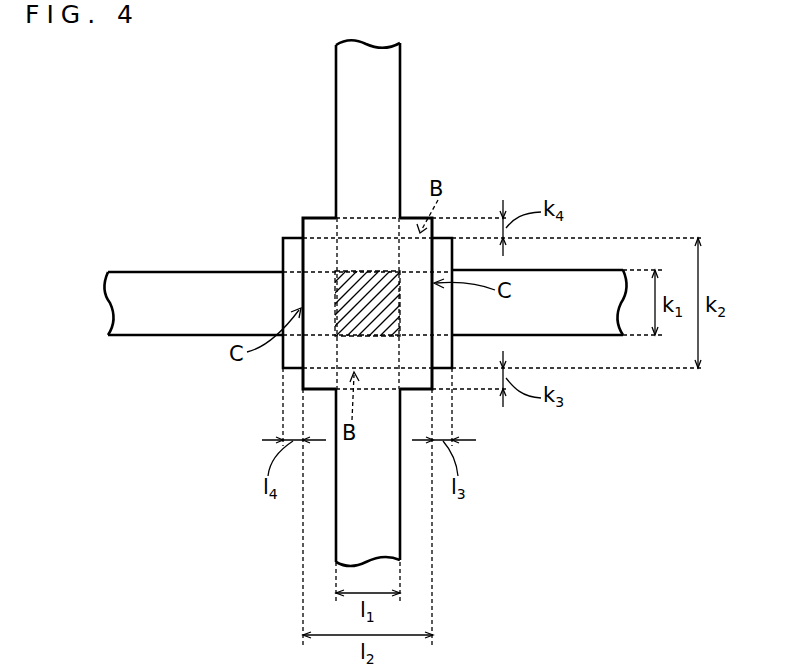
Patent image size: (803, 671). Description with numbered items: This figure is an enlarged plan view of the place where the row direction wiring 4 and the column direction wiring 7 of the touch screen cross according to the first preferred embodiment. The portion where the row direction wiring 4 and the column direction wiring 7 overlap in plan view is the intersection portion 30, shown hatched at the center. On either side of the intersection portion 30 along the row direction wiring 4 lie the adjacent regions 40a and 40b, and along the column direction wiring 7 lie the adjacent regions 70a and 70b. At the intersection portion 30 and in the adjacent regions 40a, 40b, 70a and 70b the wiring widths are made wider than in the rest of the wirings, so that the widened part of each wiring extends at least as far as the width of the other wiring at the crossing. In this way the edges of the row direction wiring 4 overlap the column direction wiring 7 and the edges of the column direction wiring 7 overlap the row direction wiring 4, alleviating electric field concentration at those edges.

The row direction wiring 4 is at (127, 284).
The column direction wiring 7 is at (343, 77).
The intersection portion 30 is at (352, 272).
The adjacent region 40a is at (282, 300).
The adjacent region 40b is at (452, 298).
The adjacent region 70a is at (371, 217).
The adjacent region 70b is at (372, 390).